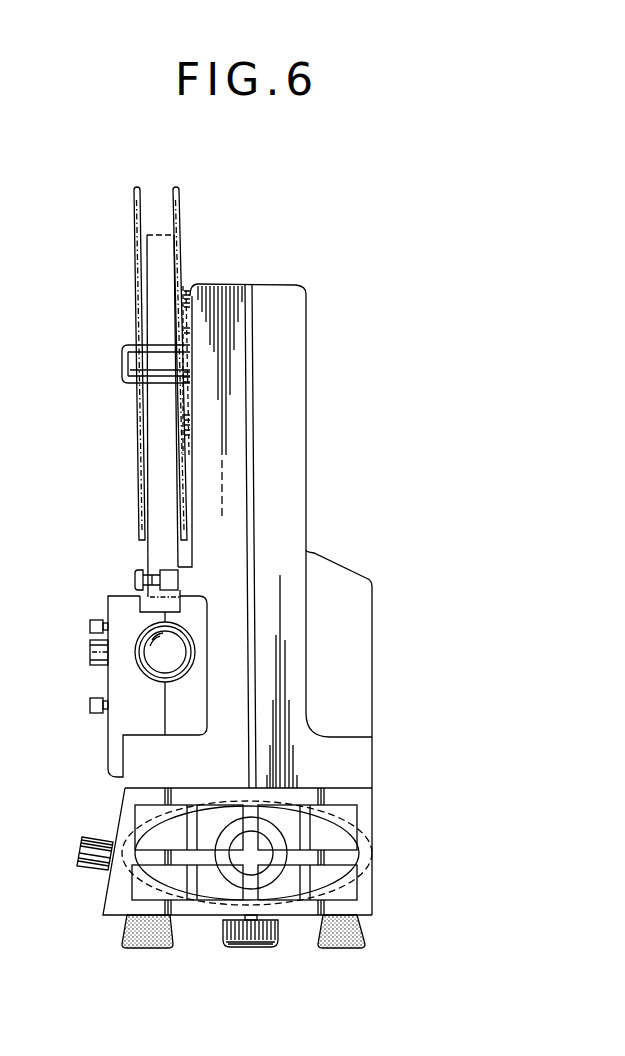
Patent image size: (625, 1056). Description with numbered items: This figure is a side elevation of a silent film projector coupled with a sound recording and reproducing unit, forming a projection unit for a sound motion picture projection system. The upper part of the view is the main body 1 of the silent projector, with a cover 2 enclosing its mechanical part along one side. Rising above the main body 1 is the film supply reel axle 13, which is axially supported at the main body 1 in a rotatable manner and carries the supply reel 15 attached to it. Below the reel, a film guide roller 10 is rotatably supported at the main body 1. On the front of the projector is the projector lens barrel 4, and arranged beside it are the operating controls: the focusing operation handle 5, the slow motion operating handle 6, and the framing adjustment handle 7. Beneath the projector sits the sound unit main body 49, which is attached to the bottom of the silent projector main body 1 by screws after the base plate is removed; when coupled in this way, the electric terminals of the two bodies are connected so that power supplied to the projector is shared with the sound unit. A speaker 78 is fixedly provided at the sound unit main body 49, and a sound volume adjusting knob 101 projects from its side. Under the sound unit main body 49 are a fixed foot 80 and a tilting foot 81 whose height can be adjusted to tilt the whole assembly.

The main body of silent film projector 1 is at (228, 283).
The cover 2 is at (306, 350).
The projector lens barrel 4 is at (146, 672).
The focusing operation handle 5 is at (90, 655).
The slow motion operating handle 6 is at (90, 626).
The framing adjustment handle 7 is at (90, 705).
The film guide roller 10 is at (135, 578).
The film supply reel axle 13 is at (120, 372).
The supply reel 15 is at (134, 211).
The sound unit main body 49 is at (374, 810).
The speaker 78 is at (340, 884).
The fixed foot 80 is at (150, 948).
The tilting foot 81 is at (252, 948).
The sound volume adjusting knob 101 is at (88, 848).